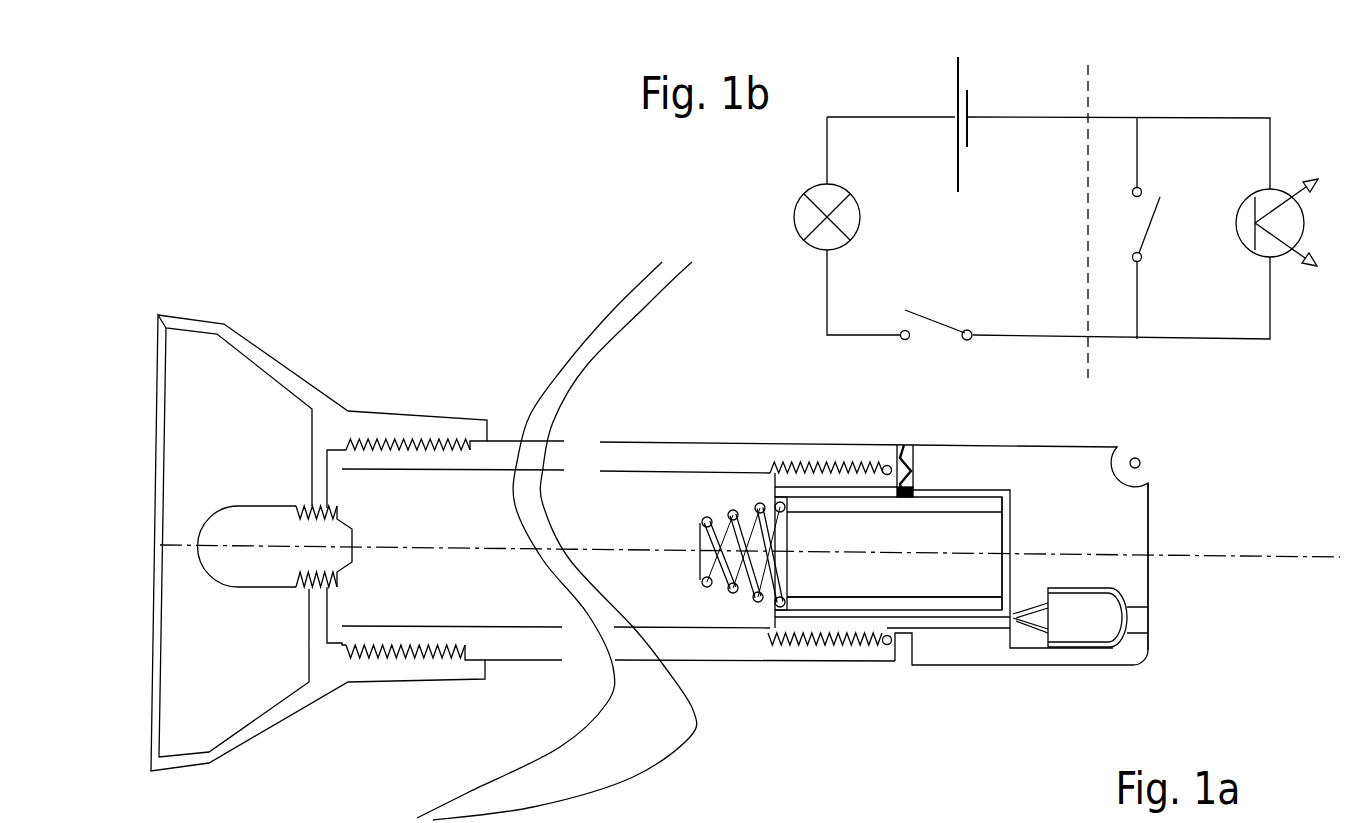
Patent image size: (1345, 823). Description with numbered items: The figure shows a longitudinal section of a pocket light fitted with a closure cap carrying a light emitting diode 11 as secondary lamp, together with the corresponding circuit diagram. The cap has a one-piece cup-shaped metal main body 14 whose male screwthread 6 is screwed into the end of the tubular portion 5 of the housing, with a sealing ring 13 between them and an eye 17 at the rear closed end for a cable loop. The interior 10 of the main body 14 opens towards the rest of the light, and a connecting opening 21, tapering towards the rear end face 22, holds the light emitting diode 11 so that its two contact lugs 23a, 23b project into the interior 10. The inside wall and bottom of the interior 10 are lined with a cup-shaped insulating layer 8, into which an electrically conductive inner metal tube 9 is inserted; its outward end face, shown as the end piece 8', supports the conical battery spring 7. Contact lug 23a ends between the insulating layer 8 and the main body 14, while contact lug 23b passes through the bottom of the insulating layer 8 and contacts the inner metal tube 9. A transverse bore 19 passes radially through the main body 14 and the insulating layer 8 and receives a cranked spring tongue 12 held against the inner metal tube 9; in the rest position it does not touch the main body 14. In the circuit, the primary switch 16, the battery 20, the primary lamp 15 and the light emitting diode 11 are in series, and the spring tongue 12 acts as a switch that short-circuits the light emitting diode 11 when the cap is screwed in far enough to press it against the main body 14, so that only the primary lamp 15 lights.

In FIG. 1a, the tubular portion 5 is at (380, 422).
In FIG. 1a, the male screwthread 6 is at (822, 463).
In FIG. 1a, the battery spring 7 is at (704, 519).
In FIG. 1a, the insulating layer 8 is at (720, 561).
In FIG. 1a, the slider end piece 8' is at (976, 553).
In FIG. 1a, the inner metal tube 9 is at (853, 597).
In FIG. 1a, the interior 10 is at (830, 561).
In FIG. 1a, the light emitting diode 11 is at (1117, 642).
In FIG. 1b, the light emitting diode 11 is at (1277, 236).
In FIG. 1a, the spring tongue 12 is at (905, 445).
In FIG. 1b, the spring tongue 12 is at (1160, 225).
In FIG. 1a, the sealing ring 13 is at (887, 465).
In FIG. 1a, the main body 14 is at (998, 447).
In FIG. 1a, the primary lamp 15 is at (258, 521).
In FIG. 1b, the primary lamp 15 is at (802, 217).
In FIG. 1b, the primary switch 16 is at (937, 333).
In FIG. 1a, the eye 17 is at (1140, 458).
In FIG. 1a, the transverse bore 19 is at (914, 445).
In FIG. 1b, the battery 20 is at (958, 110).
In FIG. 1a, the connecting opening 21 is at (1135, 617).
In FIG. 1a, the end face 22 is at (1148, 552).
In FIG. 1a, the contact lug 23a is at (1033, 630).
In FIG. 1a, the contact lug 23b is at (1027, 610).